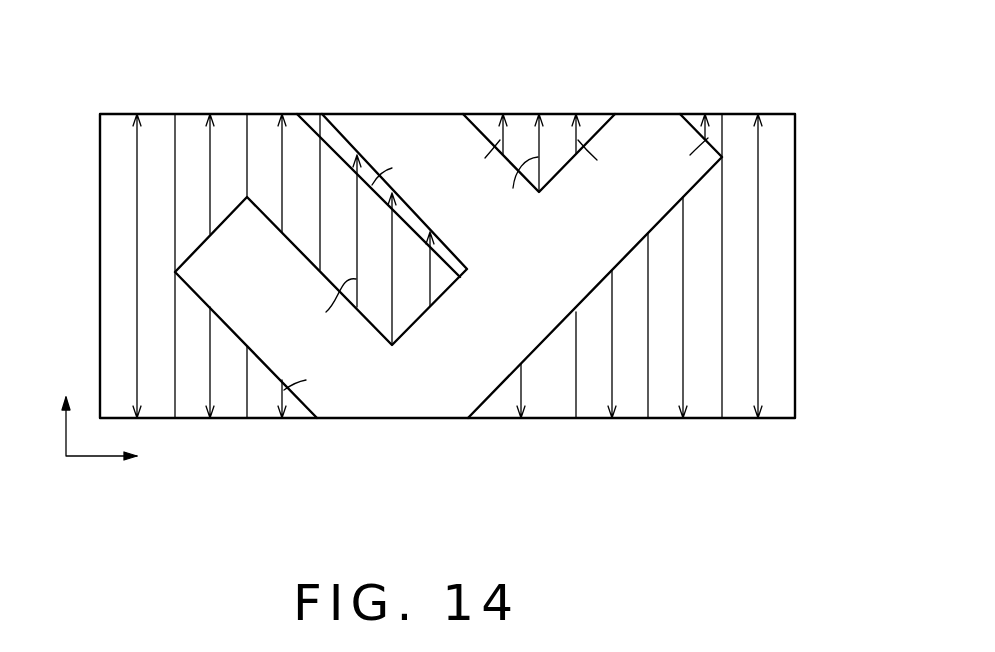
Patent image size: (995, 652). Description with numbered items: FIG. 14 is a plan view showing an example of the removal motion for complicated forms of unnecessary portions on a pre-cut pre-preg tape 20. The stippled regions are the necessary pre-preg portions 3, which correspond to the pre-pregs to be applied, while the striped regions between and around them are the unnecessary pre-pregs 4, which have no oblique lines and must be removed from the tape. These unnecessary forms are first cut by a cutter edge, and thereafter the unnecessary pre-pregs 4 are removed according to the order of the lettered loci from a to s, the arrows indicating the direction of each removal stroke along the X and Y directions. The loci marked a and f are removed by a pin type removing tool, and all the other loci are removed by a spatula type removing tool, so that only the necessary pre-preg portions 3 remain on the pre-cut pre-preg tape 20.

The necessary pre-preg portions 3 is at (399, 116).
The unnecessary pre-pregs 4 is at (595, 113).
The pre-cut pre-preg tape 20 is at (753, 98).